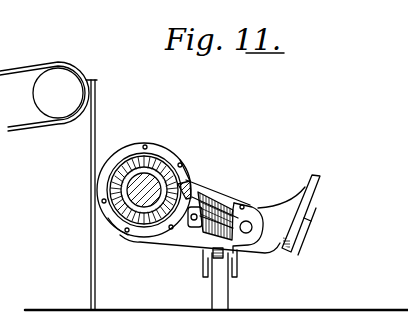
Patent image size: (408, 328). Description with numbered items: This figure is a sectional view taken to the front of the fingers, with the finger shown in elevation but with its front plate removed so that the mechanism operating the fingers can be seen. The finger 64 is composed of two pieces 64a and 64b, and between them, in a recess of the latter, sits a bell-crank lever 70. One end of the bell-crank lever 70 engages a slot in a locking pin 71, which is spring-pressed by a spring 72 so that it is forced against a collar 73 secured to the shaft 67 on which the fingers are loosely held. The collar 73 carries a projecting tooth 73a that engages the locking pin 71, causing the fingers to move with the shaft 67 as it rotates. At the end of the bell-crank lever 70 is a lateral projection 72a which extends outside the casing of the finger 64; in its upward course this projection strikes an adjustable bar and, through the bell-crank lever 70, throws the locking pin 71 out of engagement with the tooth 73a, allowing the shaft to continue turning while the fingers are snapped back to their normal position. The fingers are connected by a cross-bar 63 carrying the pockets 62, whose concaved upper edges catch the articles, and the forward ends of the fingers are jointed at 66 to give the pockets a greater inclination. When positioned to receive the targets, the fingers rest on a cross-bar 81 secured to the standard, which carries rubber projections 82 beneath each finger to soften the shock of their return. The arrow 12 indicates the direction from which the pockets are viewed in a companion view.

The arrow 12 is at (358, 267).
The pockets 62 is at (320, 188).
The cross-bar 63 is at (300, 185).
The finger 64 is at (195, 217).
The finger piece 64a is at (203, 240).
The finger piece 64b is at (200, 190).
The joint 66 is at (247, 221).
The shaft 67 is at (152, 157).
The bell-crank lever 70 is at (195, 225).
The locking pin 71 is at (183, 173).
The spring 72 is at (228, 200).
The lateral projection 72a is at (235, 200).
The collar 73 is at (140, 152).
The projecting tooth 73a is at (150, 230).
The cross-bar 81 is at (220, 262).
The rubber projections 82 is at (240, 252).